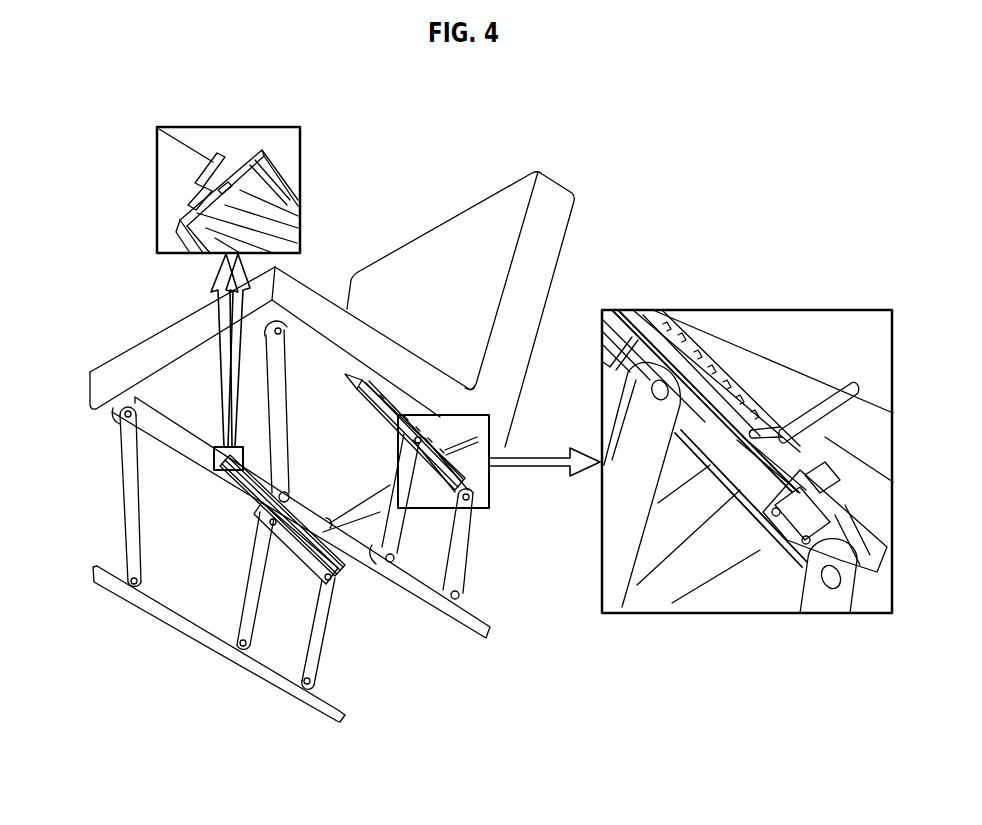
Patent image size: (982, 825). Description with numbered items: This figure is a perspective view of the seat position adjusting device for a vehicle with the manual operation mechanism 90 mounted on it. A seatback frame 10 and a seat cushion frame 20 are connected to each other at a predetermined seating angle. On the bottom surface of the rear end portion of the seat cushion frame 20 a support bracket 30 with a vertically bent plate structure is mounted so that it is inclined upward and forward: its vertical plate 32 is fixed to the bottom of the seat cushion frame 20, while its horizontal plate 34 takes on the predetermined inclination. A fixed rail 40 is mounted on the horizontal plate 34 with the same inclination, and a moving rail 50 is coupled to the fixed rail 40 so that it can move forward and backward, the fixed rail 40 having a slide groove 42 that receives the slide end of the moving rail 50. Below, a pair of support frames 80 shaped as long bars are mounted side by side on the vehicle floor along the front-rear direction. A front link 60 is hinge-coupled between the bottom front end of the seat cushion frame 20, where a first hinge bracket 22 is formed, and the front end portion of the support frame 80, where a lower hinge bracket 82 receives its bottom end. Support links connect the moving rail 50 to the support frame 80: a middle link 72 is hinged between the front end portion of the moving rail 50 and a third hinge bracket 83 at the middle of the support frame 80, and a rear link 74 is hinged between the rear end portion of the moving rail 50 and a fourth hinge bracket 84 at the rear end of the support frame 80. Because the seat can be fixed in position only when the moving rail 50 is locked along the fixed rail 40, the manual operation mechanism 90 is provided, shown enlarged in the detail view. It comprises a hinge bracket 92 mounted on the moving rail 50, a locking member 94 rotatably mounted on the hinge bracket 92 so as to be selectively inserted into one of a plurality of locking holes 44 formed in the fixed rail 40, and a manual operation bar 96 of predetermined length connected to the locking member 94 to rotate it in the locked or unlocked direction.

The seatback frame 10 is at (550, 230).
The seat cushion frame 20 is at (298, 292).
The first hinge bracket 22 is at (282, 334).
The support bracket 30 is at (378, 130).
The vertical plate 32 is at (280, 150).
The horizontal plate 34 is at (280, 160).
The fixed rail 40 is at (190, 225).
The slide groove 42 is at (192, 204).
The locking holes 44 is at (718, 370).
The moving rail 50 is at (742, 490).
The front link 60 is at (124, 490).
The middle link 72 is at (257, 580).
The rear link 74 is at (462, 556).
The support frame 80 is at (160, 622).
The pivot pin 82 is at (290, 493).
The third hinge bracket 83 is at (392, 560).
The fourth hinge bracket 84 is at (460, 597).
The manual operation mechanism 90 is at (816, 454).
The hinge bracket 92 is at (790, 500).
The locking member 94 is at (840, 476).
The manual operation bar 96 is at (822, 440).